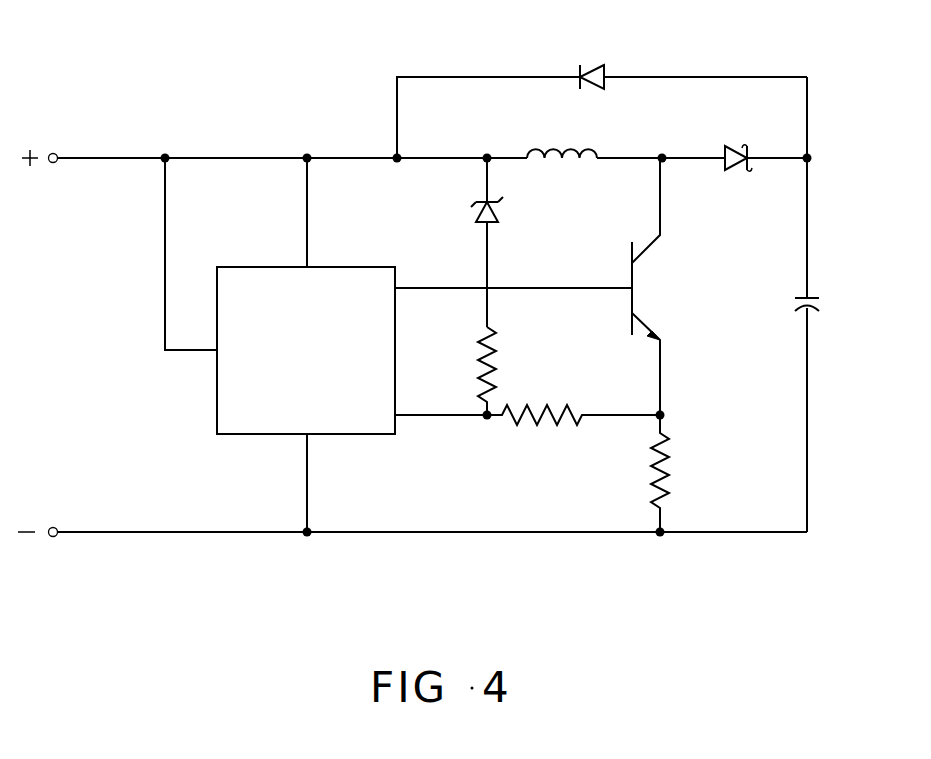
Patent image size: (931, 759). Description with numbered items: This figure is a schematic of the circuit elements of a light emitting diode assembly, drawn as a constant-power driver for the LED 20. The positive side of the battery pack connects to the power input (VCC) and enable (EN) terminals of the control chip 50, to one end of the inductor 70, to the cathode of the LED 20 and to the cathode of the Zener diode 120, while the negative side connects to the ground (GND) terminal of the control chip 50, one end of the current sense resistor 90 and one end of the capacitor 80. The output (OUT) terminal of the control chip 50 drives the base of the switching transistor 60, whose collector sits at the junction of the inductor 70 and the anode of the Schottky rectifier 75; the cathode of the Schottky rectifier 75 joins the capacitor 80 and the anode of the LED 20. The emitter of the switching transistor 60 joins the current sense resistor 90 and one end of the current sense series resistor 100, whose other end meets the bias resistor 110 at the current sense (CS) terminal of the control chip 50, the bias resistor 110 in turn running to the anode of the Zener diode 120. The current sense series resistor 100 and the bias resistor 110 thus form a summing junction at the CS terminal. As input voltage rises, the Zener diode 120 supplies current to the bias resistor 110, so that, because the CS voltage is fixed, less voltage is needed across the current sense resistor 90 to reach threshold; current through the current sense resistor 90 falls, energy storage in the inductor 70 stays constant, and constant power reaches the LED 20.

The LED 20 is at (600, 57).
The control chip 50 is at (213, 411).
The switching transistor 60 is at (648, 291).
The inductor 70 is at (560, 143).
The Schottky rectifier 75 is at (733, 140).
The capacitor 80 is at (824, 298).
The current sense resistor 90 is at (677, 473).
The current sense series resistor 100 is at (532, 428).
The bias resistor 110 is at (498, 364).
The Zener diode 120 is at (501, 212).